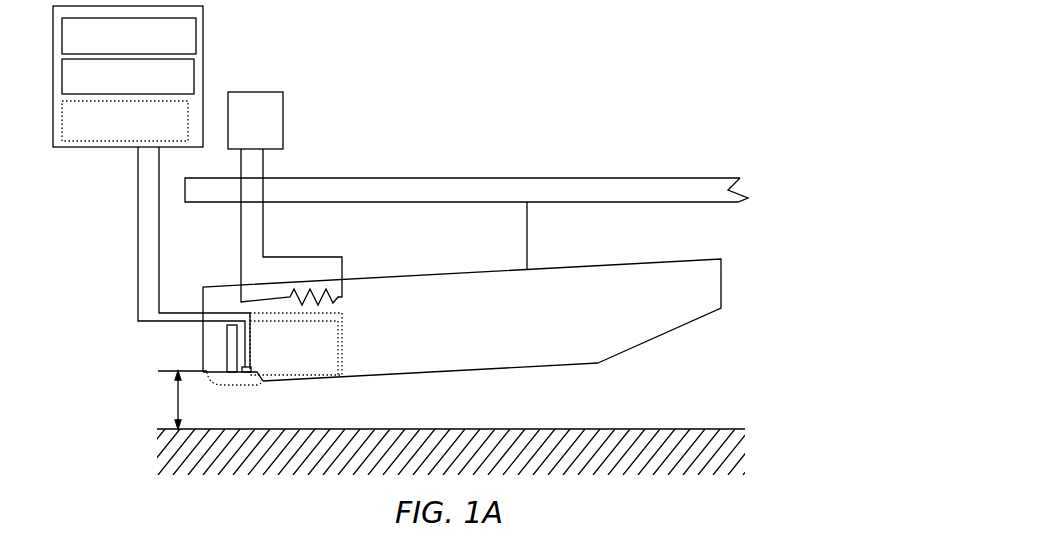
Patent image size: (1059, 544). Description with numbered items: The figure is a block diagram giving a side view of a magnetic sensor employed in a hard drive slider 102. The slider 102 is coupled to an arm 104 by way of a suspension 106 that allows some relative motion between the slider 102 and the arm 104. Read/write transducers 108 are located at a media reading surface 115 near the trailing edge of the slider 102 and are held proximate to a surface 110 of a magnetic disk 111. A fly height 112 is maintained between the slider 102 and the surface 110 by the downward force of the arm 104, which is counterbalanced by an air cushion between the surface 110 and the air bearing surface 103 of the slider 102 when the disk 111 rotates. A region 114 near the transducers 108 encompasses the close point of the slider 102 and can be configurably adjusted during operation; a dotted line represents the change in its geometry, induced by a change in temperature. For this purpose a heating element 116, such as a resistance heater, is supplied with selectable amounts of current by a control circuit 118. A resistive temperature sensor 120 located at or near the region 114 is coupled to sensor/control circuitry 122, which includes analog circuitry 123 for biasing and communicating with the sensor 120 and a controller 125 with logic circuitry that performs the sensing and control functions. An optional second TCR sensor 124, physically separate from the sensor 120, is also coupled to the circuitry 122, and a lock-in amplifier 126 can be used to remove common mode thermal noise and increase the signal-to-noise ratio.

The slider 102 is at (635, 270).
The air bearing surface 103 is at (460, 368).
The arm 104 is at (679, 184).
The suspension 106 is at (527, 233).
The read/write transducers 108 is at (227, 358).
The surface 110 is at (637, 429).
The magnetic disk 111 is at (648, 467).
The fly height 112 is at (167, 400).
The region 114 is at (262, 396).
The media reading surface 115 is at (220, 383).
The heating element 116 is at (340, 295).
The control circuit 118 is at (272, 92).
The resistive temperature sensor 120 is at (250, 367).
The sensor/control circuitry 122 is at (115, 148).
The analog circuitry 123 is at (195, 39).
The sensor 124 is at (342, 375).
The controller 125 is at (194, 68).
The lock-in amplifier 126 is at (168, 148).